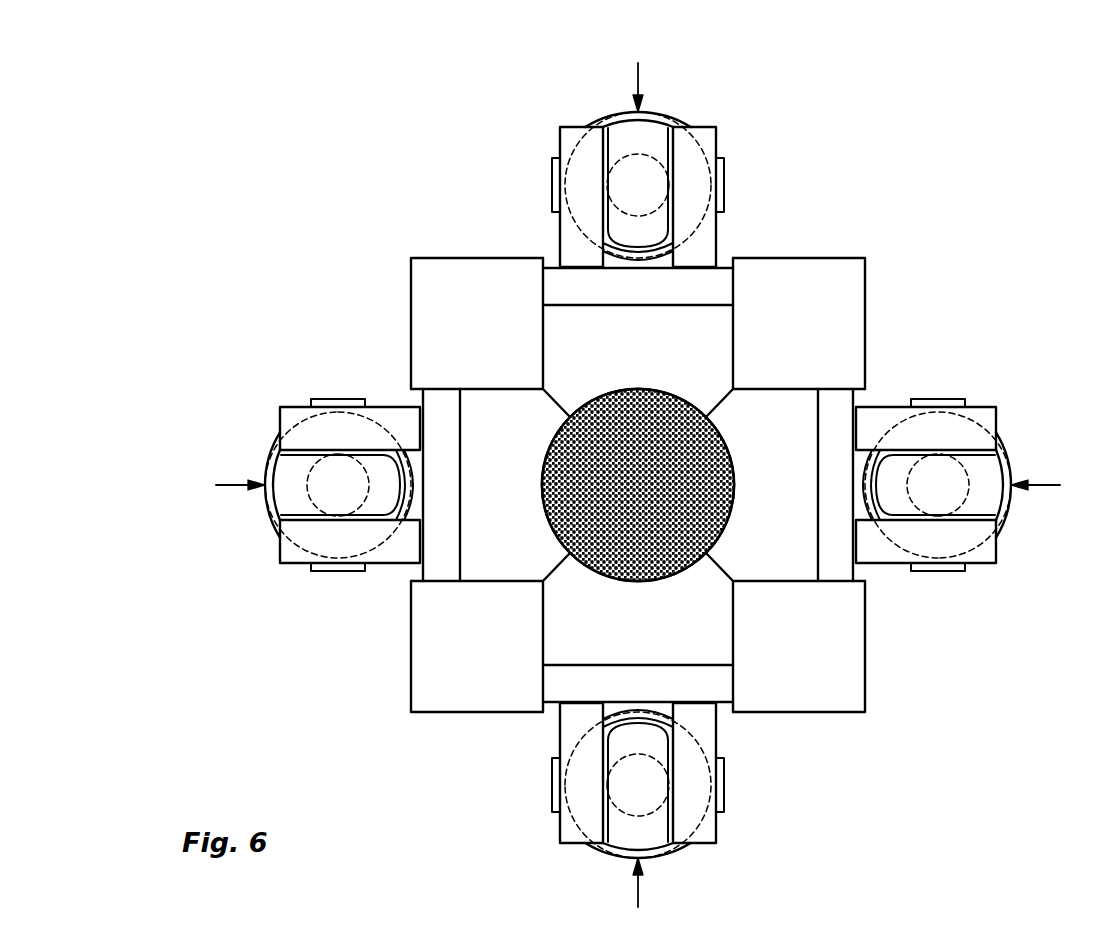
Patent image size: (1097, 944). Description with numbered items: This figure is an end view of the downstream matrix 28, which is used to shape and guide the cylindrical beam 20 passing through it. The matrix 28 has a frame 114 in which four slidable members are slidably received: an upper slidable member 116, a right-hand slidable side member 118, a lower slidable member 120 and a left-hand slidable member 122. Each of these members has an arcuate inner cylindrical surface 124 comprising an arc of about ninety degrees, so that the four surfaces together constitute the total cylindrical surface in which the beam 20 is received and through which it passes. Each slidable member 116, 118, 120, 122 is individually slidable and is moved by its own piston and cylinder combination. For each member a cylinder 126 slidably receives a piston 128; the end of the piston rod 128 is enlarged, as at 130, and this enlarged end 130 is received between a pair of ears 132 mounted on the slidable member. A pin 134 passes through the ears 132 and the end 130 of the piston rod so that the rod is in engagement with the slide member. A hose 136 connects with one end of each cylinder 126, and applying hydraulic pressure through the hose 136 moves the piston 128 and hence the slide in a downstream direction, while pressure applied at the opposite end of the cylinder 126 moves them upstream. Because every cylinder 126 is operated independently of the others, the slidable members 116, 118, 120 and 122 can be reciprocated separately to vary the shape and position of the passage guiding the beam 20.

The cylindrical beam 20 is at (667, 430).
The downstream matrix 28 is at (448, 277).
The frame 114 is at (790, 263).
The upper slidable member 116 is at (713, 327).
The right-hand slidable side member 118 is at (772, 563).
The lower slidable member 120 is at (588, 620).
The left-hand slidable member 122 is at (505, 548).
The inner cylindrical surface 124 is at (640, 390).
The cylinder 126 is at (665, 115).
The piston 128 is at (627, 147).
The enlarged end of piston rod 130 is at (707, 137).
The ears 132 is at (572, 133).
The pin 134 is at (551, 168).
The hose 136 is at (640, 82).